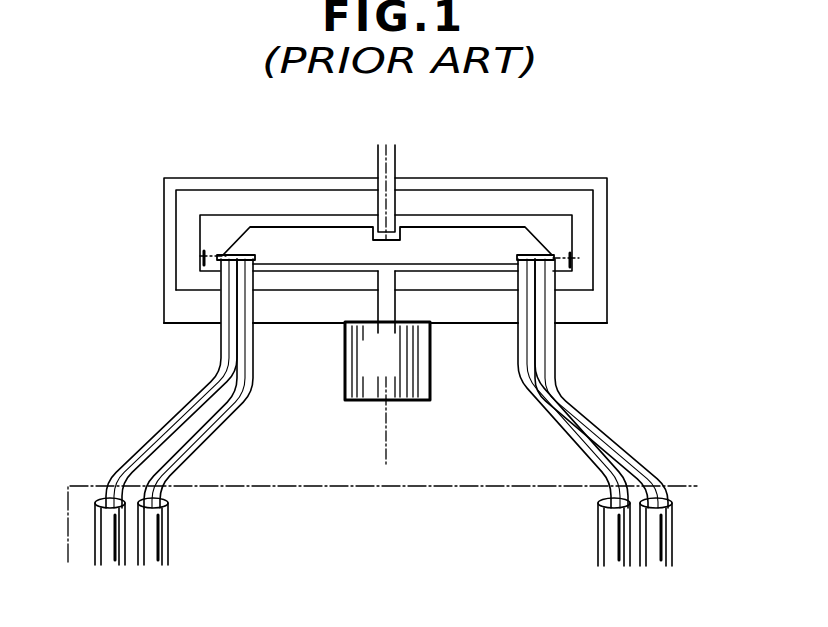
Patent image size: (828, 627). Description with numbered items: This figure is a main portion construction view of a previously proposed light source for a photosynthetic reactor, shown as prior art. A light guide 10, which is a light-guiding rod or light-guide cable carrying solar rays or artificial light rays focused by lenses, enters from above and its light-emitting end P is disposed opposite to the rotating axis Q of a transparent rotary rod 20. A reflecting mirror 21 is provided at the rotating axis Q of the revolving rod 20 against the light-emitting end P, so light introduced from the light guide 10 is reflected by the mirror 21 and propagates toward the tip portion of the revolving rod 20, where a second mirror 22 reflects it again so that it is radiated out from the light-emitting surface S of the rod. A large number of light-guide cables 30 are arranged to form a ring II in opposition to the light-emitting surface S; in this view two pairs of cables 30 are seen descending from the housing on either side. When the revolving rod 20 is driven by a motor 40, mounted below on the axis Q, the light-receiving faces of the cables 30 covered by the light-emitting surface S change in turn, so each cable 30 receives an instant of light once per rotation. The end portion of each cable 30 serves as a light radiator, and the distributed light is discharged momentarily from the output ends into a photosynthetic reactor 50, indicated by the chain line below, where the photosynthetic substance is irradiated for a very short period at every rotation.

The light guide 10 is at (397, 160).
The transparent rotary rod 20 is at (315, 240).
The reflecting mirror 21 is at (393, 242).
The mirror 22 is at (233, 248).
The light-guide cables 30 is at (170, 432).
The motor 40 is at (431, 356).
The photosynthetic reactor 50 is at (315, 492).
The light-emitting end P is at (377, 264).
The rotating axis Q is at (389, 432).
The light-emitting surface S is at (540, 256).
The ring II is at (202, 262).